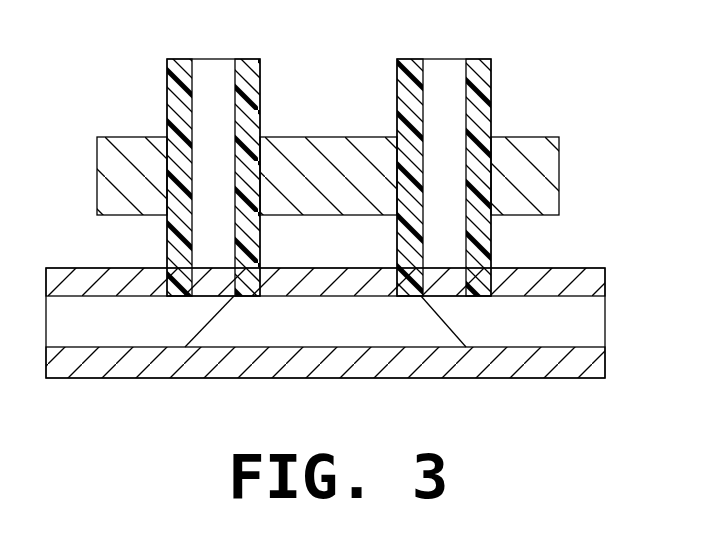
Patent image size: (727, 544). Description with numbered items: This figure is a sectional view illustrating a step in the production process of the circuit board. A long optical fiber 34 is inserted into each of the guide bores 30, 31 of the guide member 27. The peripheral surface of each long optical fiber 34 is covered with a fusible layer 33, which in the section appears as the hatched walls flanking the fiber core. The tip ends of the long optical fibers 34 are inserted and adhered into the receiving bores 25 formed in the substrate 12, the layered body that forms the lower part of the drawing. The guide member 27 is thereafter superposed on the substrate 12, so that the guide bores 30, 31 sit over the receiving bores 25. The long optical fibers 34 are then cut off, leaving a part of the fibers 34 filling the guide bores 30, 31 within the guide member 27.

The substrate 12 is at (388, 370).
The receiving bores 25 is at (256, 288).
The guide member 27 is at (555, 173).
The guide bore 30 is at (253, 140).
The guide bore 31 is at (490, 128).
The fusible layer 33 is at (180, 65).
The long optical fiber 34 is at (217, 58).